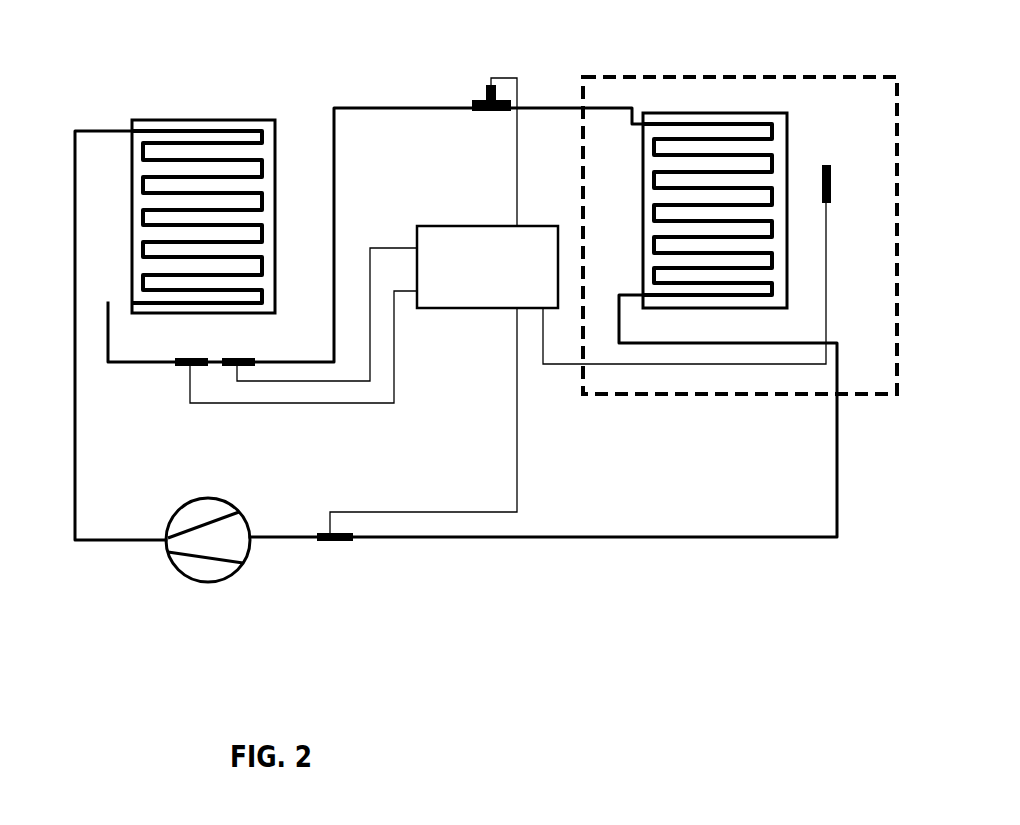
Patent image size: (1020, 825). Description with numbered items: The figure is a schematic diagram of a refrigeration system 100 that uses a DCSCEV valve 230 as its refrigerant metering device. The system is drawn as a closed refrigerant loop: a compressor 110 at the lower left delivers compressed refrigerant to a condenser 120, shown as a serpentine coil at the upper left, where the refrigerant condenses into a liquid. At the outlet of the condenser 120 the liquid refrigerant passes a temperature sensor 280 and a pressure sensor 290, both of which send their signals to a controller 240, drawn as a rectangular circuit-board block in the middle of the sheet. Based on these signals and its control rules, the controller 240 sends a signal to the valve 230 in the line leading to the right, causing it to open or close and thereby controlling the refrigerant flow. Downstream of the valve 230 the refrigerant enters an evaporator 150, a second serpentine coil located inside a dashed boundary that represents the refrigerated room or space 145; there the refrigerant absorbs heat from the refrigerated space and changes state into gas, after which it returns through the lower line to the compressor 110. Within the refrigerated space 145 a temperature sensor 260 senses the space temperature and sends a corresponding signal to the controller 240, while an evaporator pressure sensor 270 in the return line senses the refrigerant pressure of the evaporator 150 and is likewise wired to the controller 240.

The refrigeration system 100 is at (368, 92).
The compressor 110 is at (252, 498).
The condenser 120 is at (228, 155).
The refrigerated room or space 145 is at (693, 93).
The evaporator 150 is at (755, 147).
The valve 230 is at (494, 137).
The controller 240 is at (510, 247).
The temperature sensor 260 is at (846, 179).
The evaporator pressure sensor 270 is at (325, 542).
The temperature sensor 280 is at (175, 365).
The pressure sensor 290 is at (242, 358).